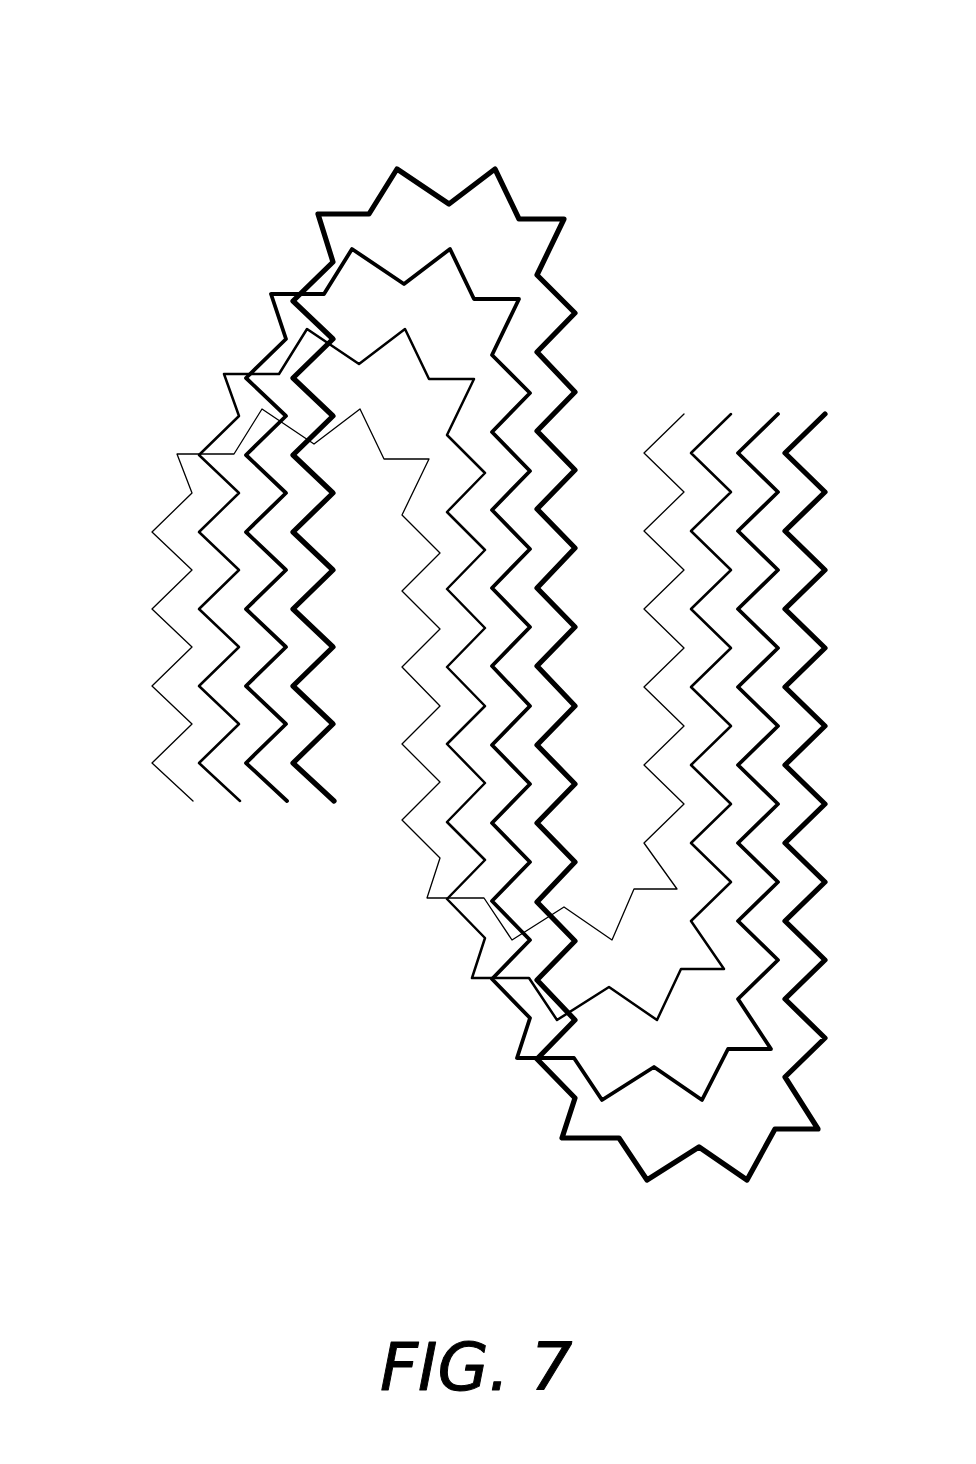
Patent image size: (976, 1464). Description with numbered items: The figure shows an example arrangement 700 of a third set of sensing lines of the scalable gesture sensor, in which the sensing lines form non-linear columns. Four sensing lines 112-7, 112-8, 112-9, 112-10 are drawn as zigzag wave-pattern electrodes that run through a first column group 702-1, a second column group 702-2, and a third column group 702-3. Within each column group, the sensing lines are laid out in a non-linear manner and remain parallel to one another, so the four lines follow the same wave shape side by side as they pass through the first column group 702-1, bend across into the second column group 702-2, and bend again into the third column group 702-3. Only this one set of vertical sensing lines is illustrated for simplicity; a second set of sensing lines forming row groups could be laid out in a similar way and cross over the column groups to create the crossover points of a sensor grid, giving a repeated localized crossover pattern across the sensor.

The example arrangement 700 is at (108, 53).
The sensing line 112-7 is at (383, 674).
The sensing line 112-8 is at (424, 674).
The sensing line 112-9 is at (465, 674).
The sensing line 112-10 is at (499, 674).
The first column group 702-1 is at (347, 972).
The second column group 702-2 is at (592, 1166).
The third column group 702-3 is at (838, 353).